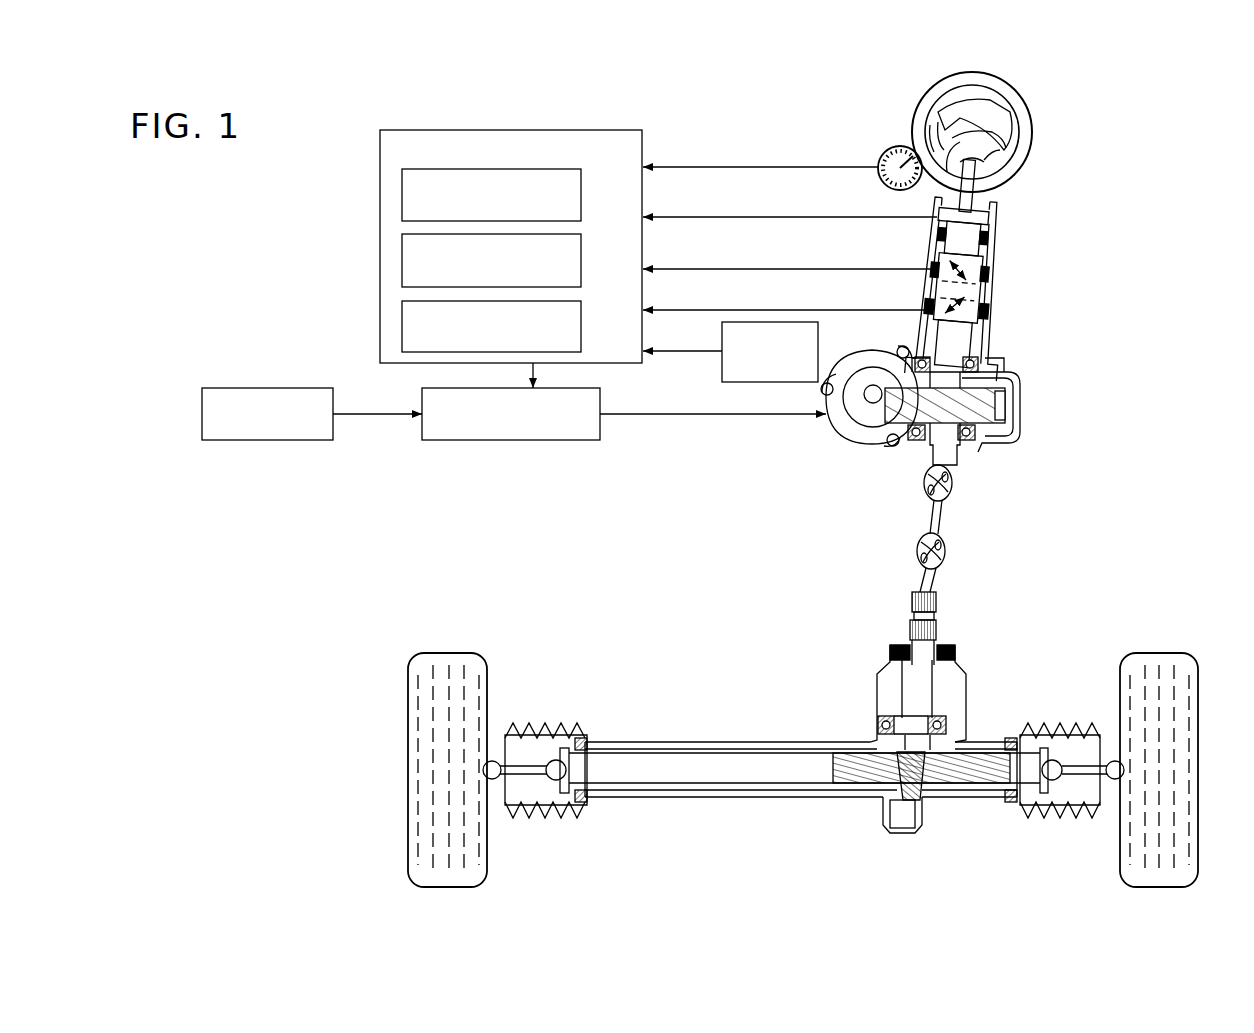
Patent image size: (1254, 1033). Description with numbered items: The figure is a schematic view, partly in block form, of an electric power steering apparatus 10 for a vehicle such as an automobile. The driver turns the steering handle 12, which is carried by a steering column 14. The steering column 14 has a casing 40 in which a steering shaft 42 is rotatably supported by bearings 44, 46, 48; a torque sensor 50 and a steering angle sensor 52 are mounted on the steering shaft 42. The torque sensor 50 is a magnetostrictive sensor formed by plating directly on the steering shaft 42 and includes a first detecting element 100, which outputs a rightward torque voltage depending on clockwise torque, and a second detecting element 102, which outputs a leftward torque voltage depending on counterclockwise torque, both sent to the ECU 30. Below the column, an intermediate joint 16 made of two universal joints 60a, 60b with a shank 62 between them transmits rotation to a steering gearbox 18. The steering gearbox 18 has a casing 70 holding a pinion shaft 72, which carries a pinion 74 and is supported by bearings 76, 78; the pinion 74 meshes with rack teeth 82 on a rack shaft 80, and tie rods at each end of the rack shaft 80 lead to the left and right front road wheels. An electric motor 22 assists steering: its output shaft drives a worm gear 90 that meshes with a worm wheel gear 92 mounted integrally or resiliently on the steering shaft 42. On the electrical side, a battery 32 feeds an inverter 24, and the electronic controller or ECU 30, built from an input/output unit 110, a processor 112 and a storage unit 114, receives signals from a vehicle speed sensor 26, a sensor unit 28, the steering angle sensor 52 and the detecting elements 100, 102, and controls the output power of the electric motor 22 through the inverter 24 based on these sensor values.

The electric power steering apparatus 10 is at (266, 224).
The steering handle 12 is at (1030, 102).
The steering column 14 is at (957, 316).
The intermediate joint 16 is at (949, 528).
The steering gearbox 18 is at (803, 739).
The electric motor 22 is at (846, 432).
The inverter 24 is at (522, 440).
The vehicle speed sensor 26 is at (885, 148).
The sensor unit 28 is at (722, 370).
The electronic controller 30 is at (658, 240).
The battery 32 is at (254, 388).
The casing 40 is at (1020, 386).
The steering shaft 42 is at (957, 294).
The bearing 44 is at (962, 235).
The bearing 46 is at (980, 362).
The bearing 48 is at (975, 442).
The torque sensor 50 is at (958, 288).
The steering angle sensor 52 is at (1030, 206).
The universal joint 60a is at (924, 484).
The universal joint 60b is at (917, 554).
The shank 62 is at (929, 518).
The casing 70 is at (795, 745).
The pinion shaft 72 is at (938, 632).
The pinion 74 is at (925, 786).
The bearing 76 is at (946, 716).
The bearing 78 is at (880, 810).
The rack shaft 80 is at (745, 790).
The rack teeth 82 is at (975, 785).
The worm gear 90 is at (868, 390).
The worm wheel gear 92 is at (1008, 405).
The first detecting element 100 is at (959, 272).
The second detecting element 102 is at (956, 309).
The input/output unit 110 is at (582, 194).
The processor 112 is at (582, 260).
The storage unit 114 is at (582, 326).